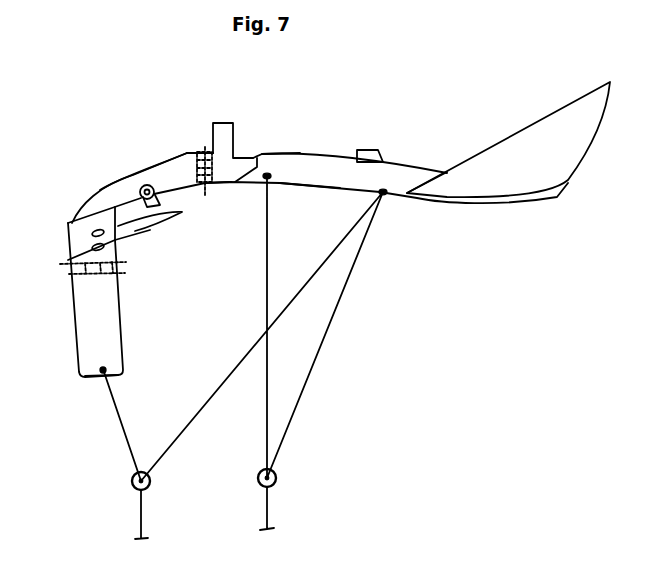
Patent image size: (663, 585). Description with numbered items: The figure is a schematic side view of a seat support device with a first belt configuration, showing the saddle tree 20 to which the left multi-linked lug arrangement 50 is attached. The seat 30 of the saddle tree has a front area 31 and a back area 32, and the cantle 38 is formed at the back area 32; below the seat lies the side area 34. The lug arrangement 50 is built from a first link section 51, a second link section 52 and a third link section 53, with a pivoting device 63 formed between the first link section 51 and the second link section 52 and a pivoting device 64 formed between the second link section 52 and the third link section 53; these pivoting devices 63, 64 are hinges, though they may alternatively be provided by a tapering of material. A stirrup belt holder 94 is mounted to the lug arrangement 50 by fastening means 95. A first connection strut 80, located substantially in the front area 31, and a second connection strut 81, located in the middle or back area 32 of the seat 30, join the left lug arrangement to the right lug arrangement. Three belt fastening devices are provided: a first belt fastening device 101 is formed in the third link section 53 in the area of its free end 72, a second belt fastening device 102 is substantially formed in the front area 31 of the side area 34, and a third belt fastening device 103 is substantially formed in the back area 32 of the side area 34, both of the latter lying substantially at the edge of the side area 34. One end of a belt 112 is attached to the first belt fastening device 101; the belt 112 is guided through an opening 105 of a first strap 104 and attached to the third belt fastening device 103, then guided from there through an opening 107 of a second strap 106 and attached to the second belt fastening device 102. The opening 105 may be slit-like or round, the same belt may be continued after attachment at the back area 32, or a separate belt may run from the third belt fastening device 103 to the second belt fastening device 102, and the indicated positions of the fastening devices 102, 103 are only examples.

The saddle tree 20 is at (82, 141).
The seat 30 is at (316, 176).
The front area 31 is at (270, 152).
The back area 32 is at (443, 170).
The side area 34 is at (308, 188).
The cantle 38 is at (580, 113).
The left multi-linked lug arrangement 50 is at (143, 265).
The first link section 51 is at (215, 186).
The second link section 52 is at (147, 170).
The third link section 53 is at (78, 327).
The pivoting device 63 is at (194, 157).
The pivoting device 64 is at (68, 269).
The free end 72 is at (116, 368).
The first connection strut 80 is at (221, 132).
The second connection strut 81 is at (360, 150).
The stirrup belt holder 94 is at (145, 229).
The fastening means 95 is at (140, 193).
The first belt fastening device 101 is at (102, 373).
The second belt fastening device 102 is at (268, 180).
The third belt fastening device 103 is at (386, 194).
The first strap 104 is at (132, 486).
The opening 105 is at (132, 477).
The second strap 106 is at (276, 486).
The opening 107 is at (276, 474).
The belt 112 is at (112, 380).